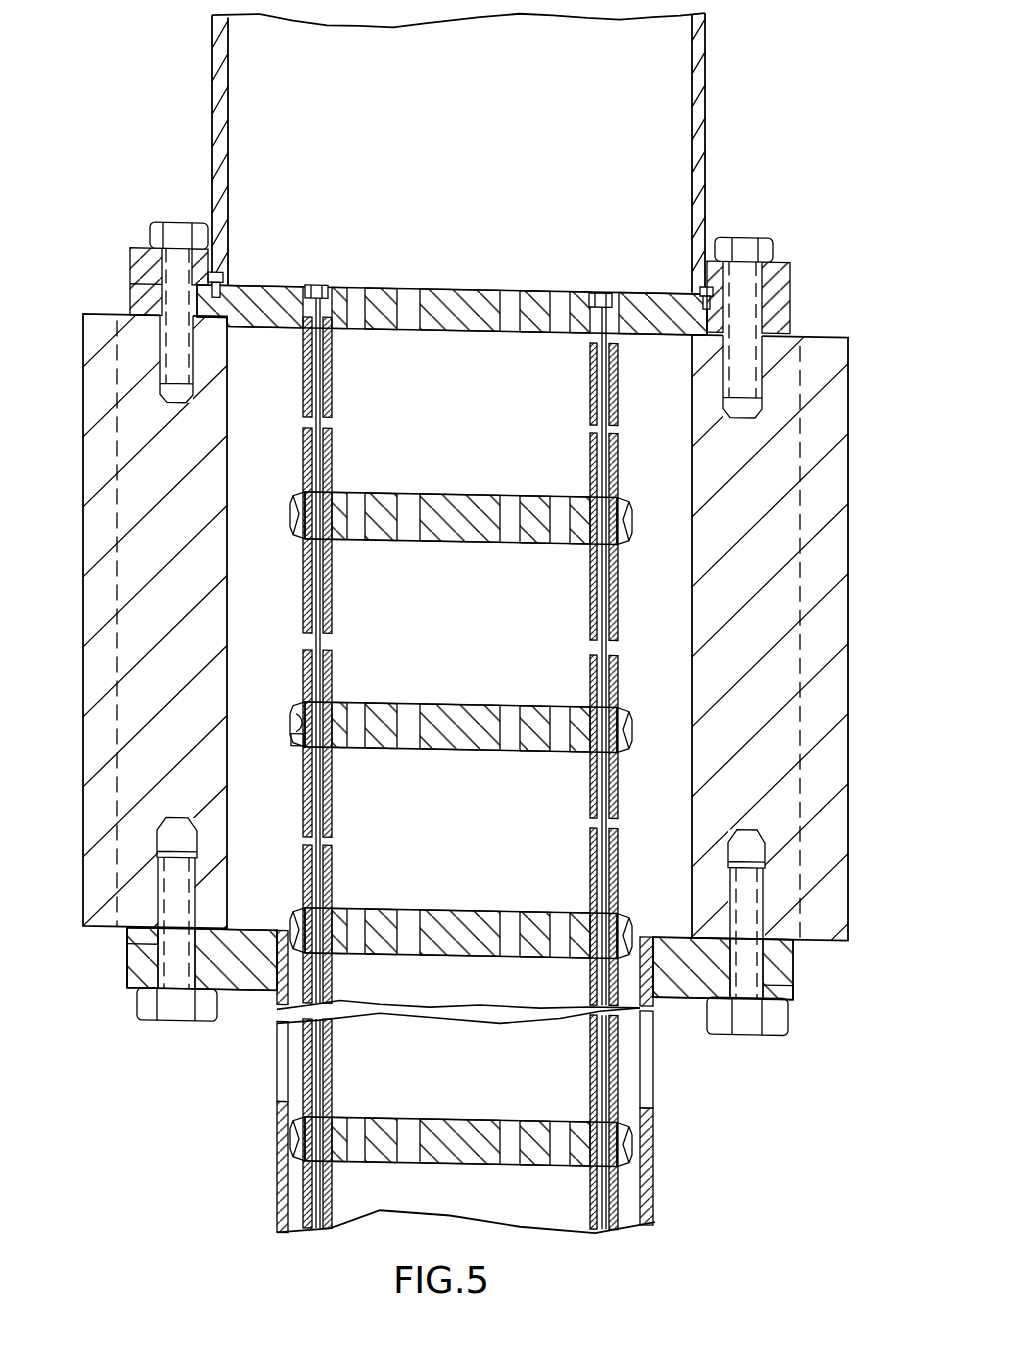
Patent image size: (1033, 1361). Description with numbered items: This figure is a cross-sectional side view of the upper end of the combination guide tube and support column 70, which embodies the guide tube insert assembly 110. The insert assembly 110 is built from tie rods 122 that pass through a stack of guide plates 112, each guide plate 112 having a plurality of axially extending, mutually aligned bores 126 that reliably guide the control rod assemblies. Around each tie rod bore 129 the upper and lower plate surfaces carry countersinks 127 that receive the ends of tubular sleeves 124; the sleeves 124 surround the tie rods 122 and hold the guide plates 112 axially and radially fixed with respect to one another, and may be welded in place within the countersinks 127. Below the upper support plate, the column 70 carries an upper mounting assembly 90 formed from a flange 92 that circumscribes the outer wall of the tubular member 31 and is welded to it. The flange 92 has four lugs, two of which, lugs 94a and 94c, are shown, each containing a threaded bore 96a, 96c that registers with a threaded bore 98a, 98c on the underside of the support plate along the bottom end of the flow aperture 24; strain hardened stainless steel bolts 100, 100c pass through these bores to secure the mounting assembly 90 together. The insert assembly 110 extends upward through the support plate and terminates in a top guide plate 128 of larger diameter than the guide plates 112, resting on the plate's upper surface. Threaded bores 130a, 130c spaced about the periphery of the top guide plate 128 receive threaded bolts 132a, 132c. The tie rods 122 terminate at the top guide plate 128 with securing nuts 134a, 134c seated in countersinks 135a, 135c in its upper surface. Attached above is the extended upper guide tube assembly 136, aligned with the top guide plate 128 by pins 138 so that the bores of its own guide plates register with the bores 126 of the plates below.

The flow aperture 24 is at (690, 671).
The tubular member 31 is at (277, 1141).
The combination guide tube and support column 70 is at (267, 1059).
The upper mounting assembly 90 is at (130, 1014).
The flange 92 is at (150, 964).
The lug 94a is at (127, 984).
The lug 94c is at (793, 952).
The threaded bore 96a is at (132, 946).
The threaded bore 96c is at (793, 972).
The threaded bore 98a is at (160, 896).
The threaded bore 98c is at (767, 905).
The bolt 100 is at (173, 1004).
The bolt 100c is at (742, 1008).
The guide tube insert assembly 110 is at (452, 1213).
The guide plate 112 is at (290, 501).
The tie rod 122 is at (305, 376).
The sleeve 124 is at (332, 451).
The bore 126 is at (355, 282).
The countersink 127 is at (302, 740).
The top guide plate 128 is at (647, 279).
The tie rod bore 129 is at (303, 718).
The threaded bore 130a is at (140, 297).
The threaded bore 130c is at (787, 296).
The threaded bolt 132a is at (183, 231).
The threaded bolt 132c is at (742, 222).
The securing nut 134a is at (313, 281).
The securing nut 134c is at (590, 286).
The countersink 135a is at (328, 285).
The countersink 135c is at (602, 282).
The upper guide tube assembly 136 is at (712, 113).
The pin 138 is at (217, 285).